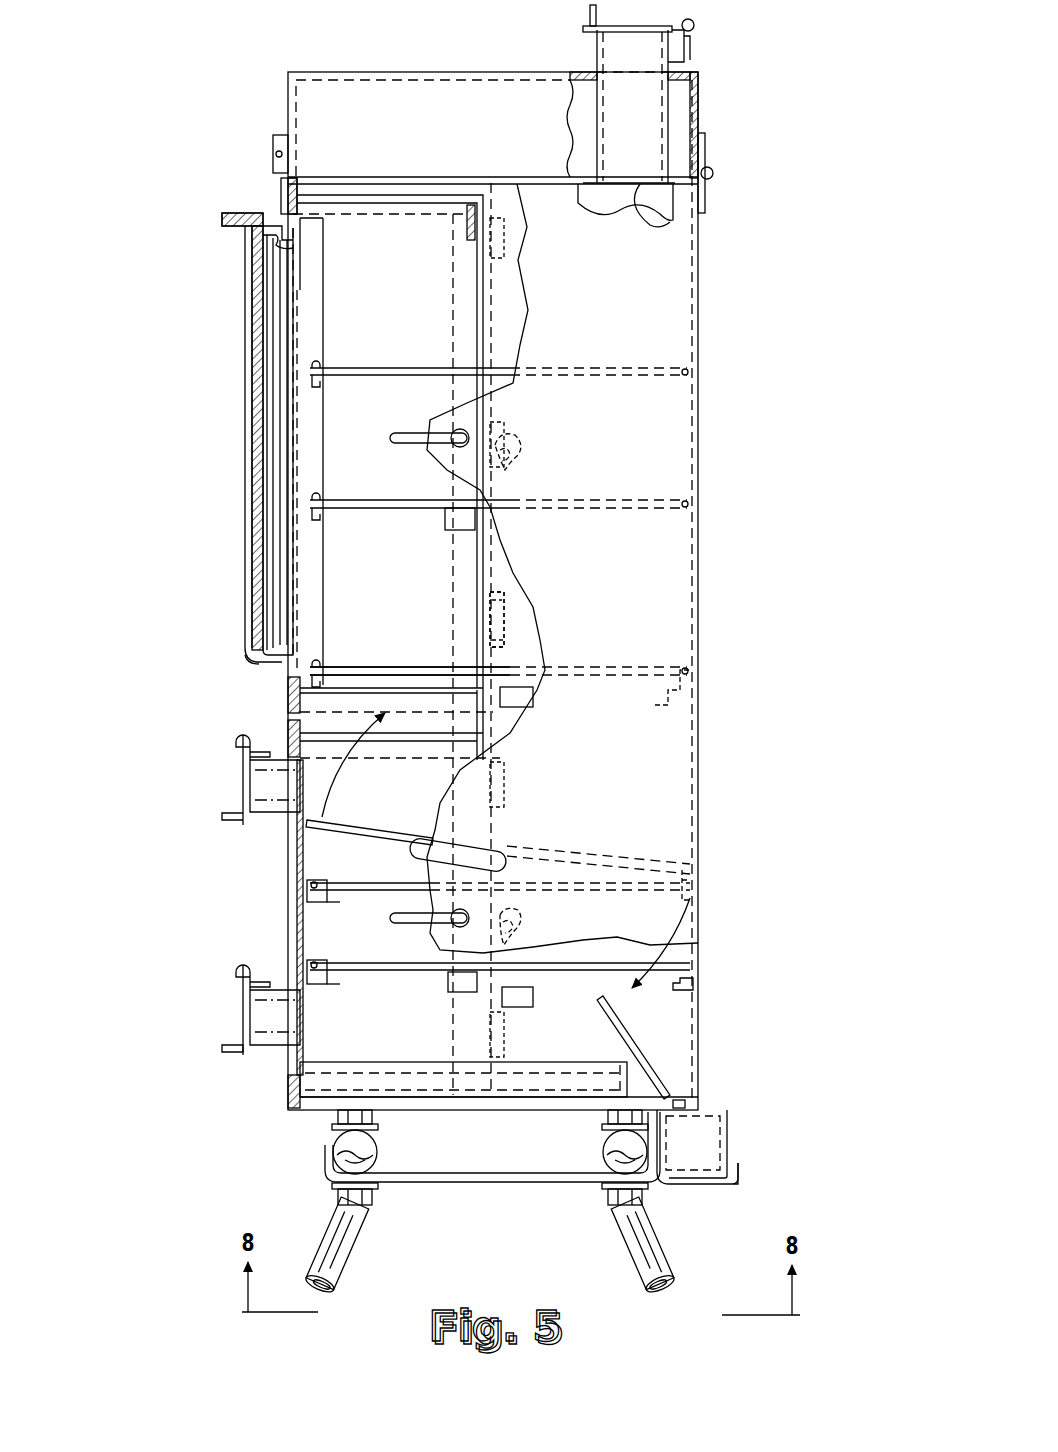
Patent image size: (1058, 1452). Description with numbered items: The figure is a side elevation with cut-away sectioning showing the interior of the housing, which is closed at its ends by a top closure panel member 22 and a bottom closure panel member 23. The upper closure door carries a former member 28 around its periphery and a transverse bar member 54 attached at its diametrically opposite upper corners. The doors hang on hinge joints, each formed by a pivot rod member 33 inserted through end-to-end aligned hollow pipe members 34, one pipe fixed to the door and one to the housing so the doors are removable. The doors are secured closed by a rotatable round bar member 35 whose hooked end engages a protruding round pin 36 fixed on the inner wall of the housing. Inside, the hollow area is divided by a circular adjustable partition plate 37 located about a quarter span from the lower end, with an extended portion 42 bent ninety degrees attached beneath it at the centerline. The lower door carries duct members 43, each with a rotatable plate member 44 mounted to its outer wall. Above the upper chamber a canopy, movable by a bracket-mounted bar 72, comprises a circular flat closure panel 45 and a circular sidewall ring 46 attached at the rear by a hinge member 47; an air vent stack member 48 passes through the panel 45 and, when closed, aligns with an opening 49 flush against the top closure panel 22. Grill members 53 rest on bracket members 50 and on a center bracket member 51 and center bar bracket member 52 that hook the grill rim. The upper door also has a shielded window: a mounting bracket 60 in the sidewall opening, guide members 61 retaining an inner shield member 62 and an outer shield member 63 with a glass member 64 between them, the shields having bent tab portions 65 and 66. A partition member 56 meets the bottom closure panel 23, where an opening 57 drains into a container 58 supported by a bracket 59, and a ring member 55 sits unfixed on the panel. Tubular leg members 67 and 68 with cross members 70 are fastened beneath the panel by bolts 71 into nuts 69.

The top closure panel member 22 is at (630, 192).
The bottom closure panel member 23 is at (465, 1110).
The former member 28 is at (285, 195).
The pivot rod member 33 is at (520, 600).
The hollow pipe member 34 is at (505, 636).
The rotatable round bar member 35 is at (505, 430).
The protruding round pin 36 is at (520, 465).
The circular adjustable partition plate 37 is at (345, 822).
The extended portion 42 is at (410, 848).
The duct member 43 is at (280, 990).
The rotatable plate member 44 is at (243, 1000).
The circular flat closure panel 45 is at (583, 70).
The circular sidewall ring 46 is at (700, 110).
The hinge member 47 is at (715, 172).
The air vent stack member 48 is at (672, 62).
The opening 49 is at (655, 213).
The bracket member 50 is at (445, 518).
The center bracket member 51 is at (670, 710).
The center bar bracket member 52 is at (312, 272).
The grill member 53 is at (415, 668).
The transverse bar member 54 is at (465, 225).
The ring member 55 is at (338, 1070).
The partition member 56 is at (638, 1048).
The opening 57 is at (680, 1100).
The container 58 is at (730, 1128).
The bracket 59 is at (693, 1186).
The mounting bracket 60 is at (240, 628).
The guide member 61 is at (295, 352).
The inner shield member 62 is at (268, 405).
The outer shield member 63 is at (250, 328).
The glass member 64 is at (282, 528).
The bent tab portion 65 is at (240, 232).
The bent tab portion 66 is at (237, 215).
The tubular leg member 67 is at (350, 1245).
The tubular leg member 68 is at (640, 1250).
The nut 69 is at (335, 1117).
The cross member 70 is at (503, 1180).
The bolt 71 is at (610, 1195).
The bar 72 is at (275, 145).